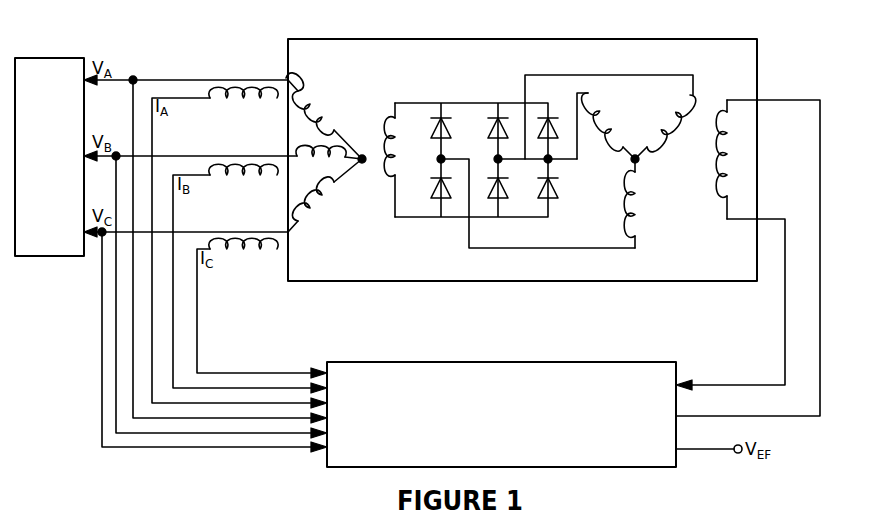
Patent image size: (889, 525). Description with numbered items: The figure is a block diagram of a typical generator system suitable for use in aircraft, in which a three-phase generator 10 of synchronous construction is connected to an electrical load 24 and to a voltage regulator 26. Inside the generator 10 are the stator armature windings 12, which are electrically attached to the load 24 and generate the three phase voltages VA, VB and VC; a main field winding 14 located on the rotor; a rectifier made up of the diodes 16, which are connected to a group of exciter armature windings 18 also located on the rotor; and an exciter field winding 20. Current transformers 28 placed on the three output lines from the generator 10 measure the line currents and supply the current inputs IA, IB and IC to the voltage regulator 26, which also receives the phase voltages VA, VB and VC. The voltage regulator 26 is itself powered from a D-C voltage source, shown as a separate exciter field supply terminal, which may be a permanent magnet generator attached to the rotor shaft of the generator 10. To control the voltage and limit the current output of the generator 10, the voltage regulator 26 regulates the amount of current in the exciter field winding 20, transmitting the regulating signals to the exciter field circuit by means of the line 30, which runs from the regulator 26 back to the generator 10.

The three-phase generator 10 is at (606, 39).
The stator armature windings 12 is at (339, 129).
The main field winding 14 is at (388, 159).
The diodes 16 is at (473, 120).
The exciter armature windings 18 is at (623, 150).
The exciter field winding 20 is at (721, 181).
The electrical load 24 is at (79, 58).
The voltage regulator 26 is at (597, 362).
The current transformers 28 is at (243, 106).
The line 30 is at (781, 303).